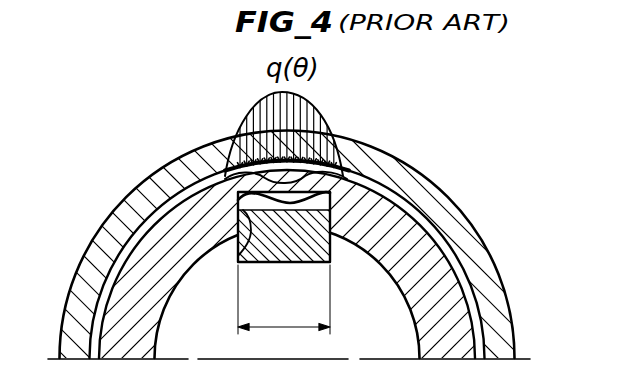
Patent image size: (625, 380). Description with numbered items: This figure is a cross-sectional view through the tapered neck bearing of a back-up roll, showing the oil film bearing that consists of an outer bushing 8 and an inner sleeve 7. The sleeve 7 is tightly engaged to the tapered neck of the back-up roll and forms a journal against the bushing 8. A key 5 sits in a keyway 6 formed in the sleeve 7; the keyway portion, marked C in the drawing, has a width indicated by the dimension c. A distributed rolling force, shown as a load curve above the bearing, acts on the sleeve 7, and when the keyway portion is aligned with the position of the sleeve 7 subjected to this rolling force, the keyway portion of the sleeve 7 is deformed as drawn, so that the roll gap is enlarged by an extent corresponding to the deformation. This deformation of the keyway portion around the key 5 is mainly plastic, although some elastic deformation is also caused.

The key 5 is at (281, 262).
The keyway 6 is at (240, 233).
The sleeve 7 is at (413, 213).
The bushing 8 is at (377, 162).